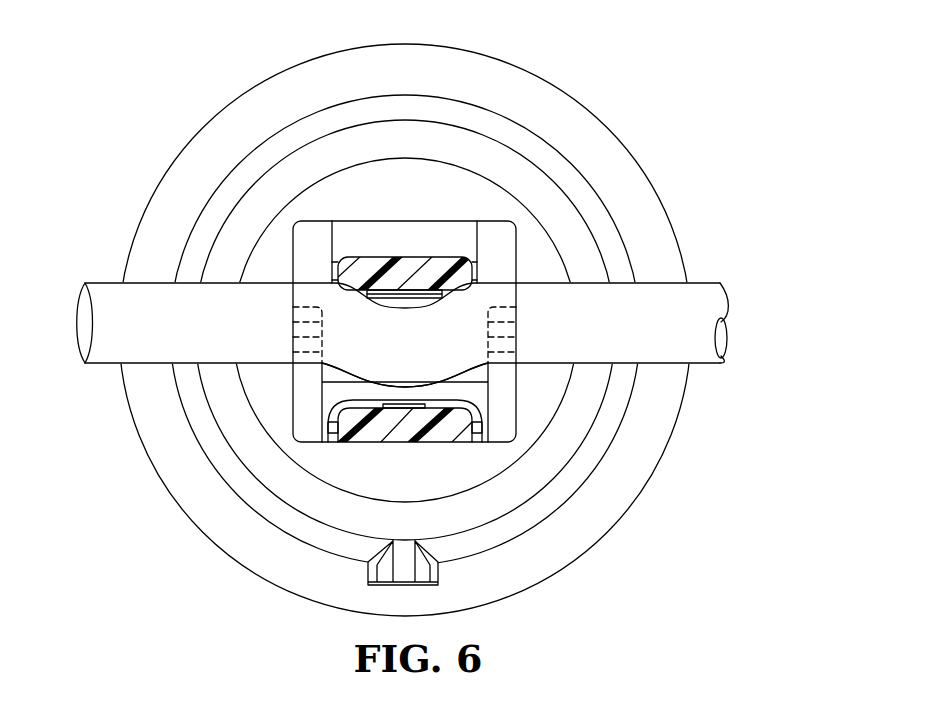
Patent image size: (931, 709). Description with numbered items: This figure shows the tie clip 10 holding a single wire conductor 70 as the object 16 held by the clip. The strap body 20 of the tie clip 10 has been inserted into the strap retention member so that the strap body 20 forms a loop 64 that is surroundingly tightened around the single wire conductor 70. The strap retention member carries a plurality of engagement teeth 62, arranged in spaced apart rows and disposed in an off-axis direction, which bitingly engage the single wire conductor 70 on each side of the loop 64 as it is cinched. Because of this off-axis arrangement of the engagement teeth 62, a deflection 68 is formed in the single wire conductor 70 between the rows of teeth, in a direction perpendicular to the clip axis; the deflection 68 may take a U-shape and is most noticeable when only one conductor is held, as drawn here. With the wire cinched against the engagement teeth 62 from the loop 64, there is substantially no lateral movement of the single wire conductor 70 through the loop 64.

The tie clip 10 is at (632, 72).
The object 16 is at (677, 283).
The strap body 20 is at (377, 257).
The engagement teeth 62 is at (300, 305).
The loop 64 is at (448, 405).
The deflection 68 is at (390, 370).
The single wire conductor 70 is at (702, 353).